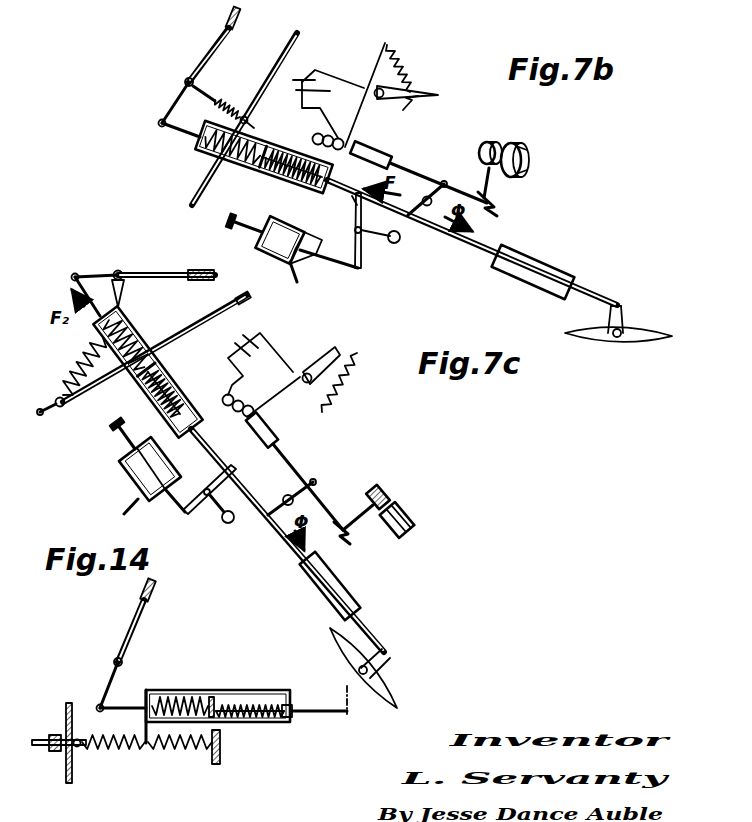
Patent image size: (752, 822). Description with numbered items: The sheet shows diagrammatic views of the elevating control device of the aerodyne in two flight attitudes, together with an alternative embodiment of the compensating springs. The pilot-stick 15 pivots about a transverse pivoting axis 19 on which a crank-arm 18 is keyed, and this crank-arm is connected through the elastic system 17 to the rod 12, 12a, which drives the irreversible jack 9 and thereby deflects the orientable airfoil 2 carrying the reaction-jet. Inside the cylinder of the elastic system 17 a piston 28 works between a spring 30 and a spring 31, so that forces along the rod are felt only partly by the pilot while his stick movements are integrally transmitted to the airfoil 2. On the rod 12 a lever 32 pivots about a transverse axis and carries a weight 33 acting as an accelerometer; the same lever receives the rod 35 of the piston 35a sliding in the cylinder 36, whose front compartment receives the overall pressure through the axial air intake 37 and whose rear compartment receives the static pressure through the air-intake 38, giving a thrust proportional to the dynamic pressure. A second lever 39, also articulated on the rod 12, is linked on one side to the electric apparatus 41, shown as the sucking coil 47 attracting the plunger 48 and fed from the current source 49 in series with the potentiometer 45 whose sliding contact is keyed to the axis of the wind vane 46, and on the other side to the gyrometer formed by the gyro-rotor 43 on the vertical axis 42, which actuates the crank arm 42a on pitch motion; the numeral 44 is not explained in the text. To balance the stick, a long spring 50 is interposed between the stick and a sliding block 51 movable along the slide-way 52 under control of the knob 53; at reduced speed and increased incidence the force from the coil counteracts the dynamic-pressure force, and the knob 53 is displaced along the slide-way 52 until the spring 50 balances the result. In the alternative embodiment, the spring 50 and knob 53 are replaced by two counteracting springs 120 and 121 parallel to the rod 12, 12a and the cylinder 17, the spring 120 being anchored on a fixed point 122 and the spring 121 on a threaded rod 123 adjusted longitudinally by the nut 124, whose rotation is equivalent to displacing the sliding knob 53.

In FIG. 7B, the orientable airfoil 2 is at (634, 336).
In FIG. 7C, the orientable airfoil 2 is at (345, 661).
In FIG. 7B, the irreversible jack 9 is at (532, 270).
In FIG. 7C, the irreversible jack 9 is at (326, 586).
In FIG. 7B, the rod 12 is at (426, 228).
In FIG. 7C, the rod 12 is at (280, 528).
In FIG. 14, the rod 12 is at (304, 710).
In FIG. 7B, the rod 12a is at (192, 135).
In FIG. 14, the rod 12a is at (124, 706).
In FIG. 7B, the pilot-stick 15 is at (216, 58).
In FIG. 7C, the pilot-stick 15 is at (150, 272).
In FIG. 14, the pilot-stick 15 is at (138, 612).
In FIG. 7B, the elastic system 17 is at (276, 157).
In FIG. 7C, the elastic system 17 is at (134, 374).
In FIG. 14, the elastic system 17 is at (250, 724).
In FIG. 7B, the crank-arm 18 is at (165, 118).
In FIG. 7C, the crank-arm 18 is at (100, 272).
In FIG. 14, the crank-arm 18 is at (100, 703).
In FIG. 7B, the transverse pivoting axis 19 is at (185, 82).
In FIG. 7C, the transverse pivoting axis 19 is at (128, 260).
In FIG. 14, the transverse pivoting axis 19 is at (113, 661).
In FIG. 7B, the piston 28 is at (258, 172).
In FIG. 7C, the piston 28 is at (165, 384).
In FIG. 14, the piston 28 is at (212, 697).
In FIG. 7B, the spring 30 is at (205, 152).
In FIG. 7C, the spring 30 is at (148, 380).
In FIG. 14, the spring 30 is at (166, 694).
In FIG. 7B, the spring 31 is at (320, 168).
In FIG. 7C, the spring 31 is at (186, 418).
In FIG. 14, the spring 31 is at (240, 696).
In FIG. 7B, the lever 32 is at (361, 246).
In FIG. 7C, the lever 32 is at (203, 488).
In FIG. 7B, the weight 33 is at (396, 244).
In FIG. 7C, the weight 33 is at (232, 523).
In FIG. 7B, the rod of piston 35 is at (332, 262).
In FIG. 7C, the rod of piston 35 is at (176, 470).
In FIG. 7B, the piston 35a is at (352, 206).
In FIG. 7B, the cylinder 36 is at (262, 246).
In FIG. 7C, the cylinder 36 is at (126, 470).
In FIG. 7B, the air intake 37 is at (244, 224).
In FIG. 7C, the air intake 37 is at (114, 430).
In FIG. 7B, the air-intake 38 is at (294, 276).
In FIG. 7C, the air-intake 38 is at (140, 514).
In FIG. 7B, the second lever 39 is at (443, 178).
In FIG. 7C, the second lever 39 is at (308, 481).
In FIG. 7B, the electric apparatus 41 is at (368, 95).
In FIG. 7C, the electric apparatus 41 is at (273, 393).
In FIG. 7B, the vertical axis 42 is at (486, 180).
In FIG. 7C, the vertical axis 42 is at (354, 512).
In FIG. 7B, the crank arm 42a is at (498, 210).
In FIG. 7C, the crank arm 42a is at (348, 540).
In FIG. 7B, the gyro-rotor 43 is at (517, 146).
In FIG. 7C, the gyro-rotor 43 is at (414, 516).
In FIG. 7B, the roller 44 is at (492, 136).
In FIG. 7C, the roller 44 is at (384, 488).
In FIG. 7B, the potentiometer 45 is at (408, 62).
In FIG. 7C, the potentiometer 45 is at (338, 398).
In FIG. 7B, the wind vane 46 is at (420, 98).
In FIG. 7C, the wind vane 46 is at (344, 358).
In FIG. 7B, the sucking coil 47 is at (342, 138).
In FIG. 7C, the sucking coil 47 is at (228, 408).
In FIG. 7B, the plunger 48 is at (372, 150).
In FIG. 7C, the plunger 48 is at (272, 430).
In FIG. 7B, the current source 49 is at (316, 72).
In FIG. 7C, the current source 49 is at (260, 325).
In FIG. 7B, the long spring 50 is at (226, 101).
In FIG. 7C, the long spring 50 is at (84, 362).
In FIG. 7C, the sliding block 51 is at (57, 398).
In FIG. 7B, the slide-way 52 is at (274, 72).
In FIG. 7C, the slide-way 52 is at (166, 342).
In FIG. 7B, the knob 53 is at (252, 125).
In FIG. 7C, the knob 53 is at (36, 413).
In FIG. 14, the spring 120 is at (172, 754).
In FIG. 14, the spring 121 is at (116, 752).
In FIG. 14, the fixed point 122 is at (212, 762).
In FIG. 14, the threaded rod 123 is at (84, 738).
In FIG. 14, the nut 124 is at (56, 738).